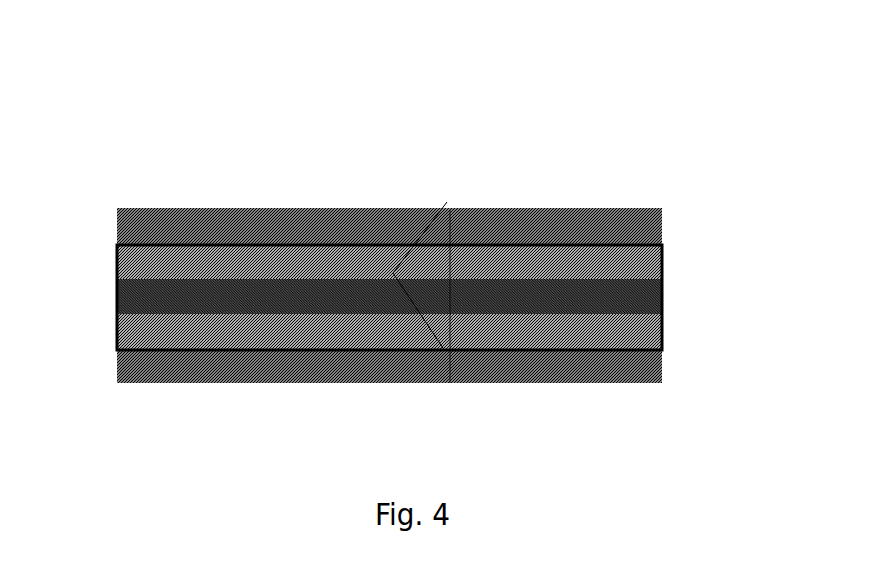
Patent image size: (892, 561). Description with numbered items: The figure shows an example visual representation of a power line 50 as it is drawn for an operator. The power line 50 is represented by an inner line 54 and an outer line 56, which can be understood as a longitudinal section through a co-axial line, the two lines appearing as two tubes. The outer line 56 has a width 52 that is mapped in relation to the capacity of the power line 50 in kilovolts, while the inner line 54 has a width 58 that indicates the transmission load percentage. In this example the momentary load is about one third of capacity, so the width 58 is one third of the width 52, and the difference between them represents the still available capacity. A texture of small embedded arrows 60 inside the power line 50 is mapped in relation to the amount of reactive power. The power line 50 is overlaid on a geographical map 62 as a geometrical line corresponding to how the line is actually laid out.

The power line 50 is at (274, 236).
The width of the outer line 52 is at (665, 247).
The inner line 54 is at (507, 297).
The outer line 56 is at (213, 327).
The width of the inner line 58 is at (113, 280).
The embedded arrows 60 is at (428, 268).
The geographical map 62 is at (575, 362).